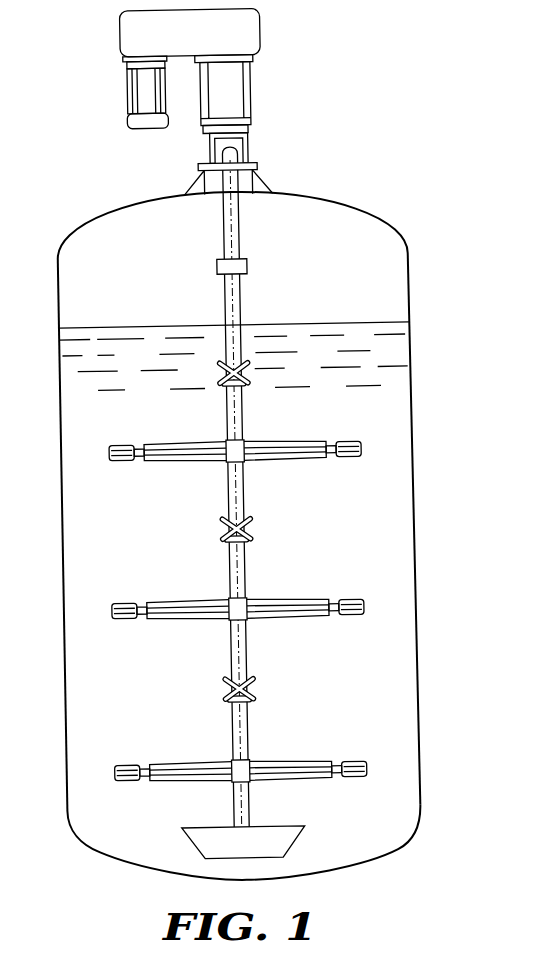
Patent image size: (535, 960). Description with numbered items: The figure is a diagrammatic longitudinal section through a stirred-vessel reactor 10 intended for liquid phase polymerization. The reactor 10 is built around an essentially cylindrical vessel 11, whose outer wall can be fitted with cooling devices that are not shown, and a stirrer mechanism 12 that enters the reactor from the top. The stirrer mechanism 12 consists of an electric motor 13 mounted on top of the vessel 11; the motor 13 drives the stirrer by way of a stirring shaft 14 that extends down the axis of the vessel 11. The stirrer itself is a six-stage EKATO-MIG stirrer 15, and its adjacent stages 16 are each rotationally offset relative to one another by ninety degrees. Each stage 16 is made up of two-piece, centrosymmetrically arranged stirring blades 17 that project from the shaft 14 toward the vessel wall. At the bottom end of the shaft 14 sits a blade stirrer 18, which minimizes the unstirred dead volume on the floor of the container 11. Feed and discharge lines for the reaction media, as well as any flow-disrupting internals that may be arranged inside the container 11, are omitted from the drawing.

The stirred-vessel reactor 10 is at (248, 444).
The vessel 11 is at (414, 415).
The stirrer mechanism 12 is at (132, 246).
The electric motor 13 is at (128, 33).
The stirring shaft 14 is at (226, 413).
The EKATO-MIG stirrer 15 is at (188, 612).
The stage 16 is at (326, 465).
The stirring blades 17 is at (301, 614).
The blade stirrer 18 is at (194, 837).